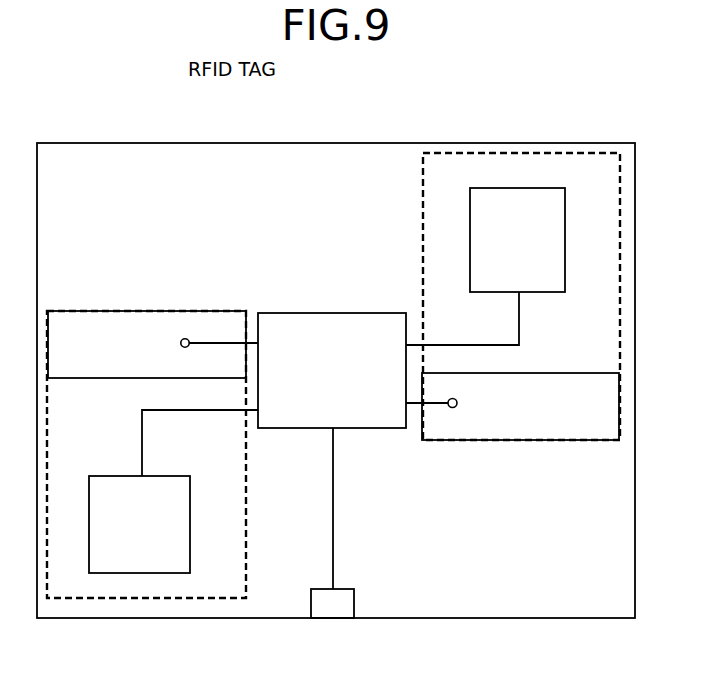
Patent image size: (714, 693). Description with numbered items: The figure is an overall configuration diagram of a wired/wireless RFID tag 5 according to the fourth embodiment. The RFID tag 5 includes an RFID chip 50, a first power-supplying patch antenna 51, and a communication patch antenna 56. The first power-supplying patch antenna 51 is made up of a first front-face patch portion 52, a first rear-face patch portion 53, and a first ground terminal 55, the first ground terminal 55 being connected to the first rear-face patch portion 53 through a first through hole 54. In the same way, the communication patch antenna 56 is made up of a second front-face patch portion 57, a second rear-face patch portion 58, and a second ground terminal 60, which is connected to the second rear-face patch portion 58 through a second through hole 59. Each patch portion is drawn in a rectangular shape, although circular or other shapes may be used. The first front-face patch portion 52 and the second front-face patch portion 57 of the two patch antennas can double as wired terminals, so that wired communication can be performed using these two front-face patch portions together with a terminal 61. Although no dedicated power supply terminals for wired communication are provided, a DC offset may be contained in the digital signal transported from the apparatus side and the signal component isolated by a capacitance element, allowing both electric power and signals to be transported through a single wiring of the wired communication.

The RFID tag 5 is at (210, 142).
The RFID chip 50 is at (363, 415).
The first power-supplying patch antenna 51 is at (381, 252).
The first front-face patch portion 52 is at (508, 197).
The first rear-face patch portion 53 is at (593, 163).
The first through hole 54 is at (452, 417).
The first ground terminal 55 is at (543, 417).
The communication patch antenna 56 is at (297, 524).
The second front-face patch portion 57 is at (152, 563).
The second rear-face patch portion 58 is at (71, 588).
The second through hole 59 is at (184, 328).
The second ground terminal 60 is at (89, 337).
The terminal 61 is at (336, 614).